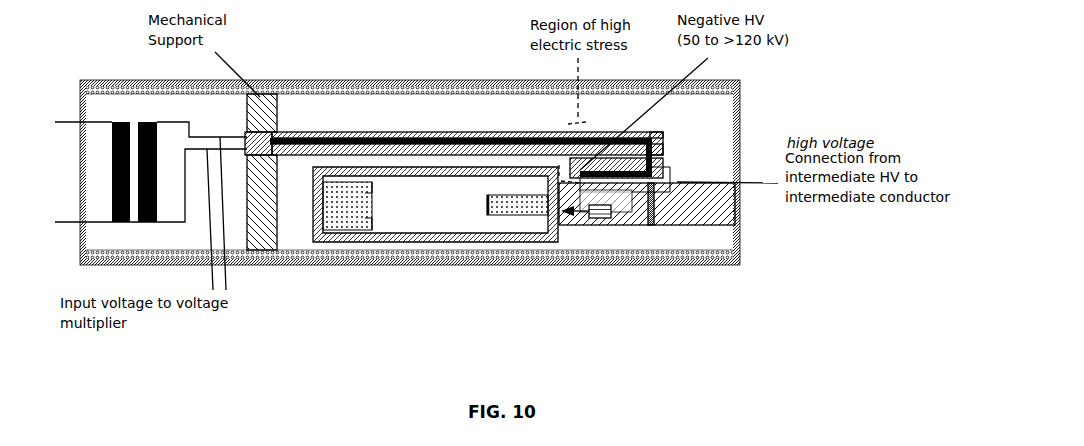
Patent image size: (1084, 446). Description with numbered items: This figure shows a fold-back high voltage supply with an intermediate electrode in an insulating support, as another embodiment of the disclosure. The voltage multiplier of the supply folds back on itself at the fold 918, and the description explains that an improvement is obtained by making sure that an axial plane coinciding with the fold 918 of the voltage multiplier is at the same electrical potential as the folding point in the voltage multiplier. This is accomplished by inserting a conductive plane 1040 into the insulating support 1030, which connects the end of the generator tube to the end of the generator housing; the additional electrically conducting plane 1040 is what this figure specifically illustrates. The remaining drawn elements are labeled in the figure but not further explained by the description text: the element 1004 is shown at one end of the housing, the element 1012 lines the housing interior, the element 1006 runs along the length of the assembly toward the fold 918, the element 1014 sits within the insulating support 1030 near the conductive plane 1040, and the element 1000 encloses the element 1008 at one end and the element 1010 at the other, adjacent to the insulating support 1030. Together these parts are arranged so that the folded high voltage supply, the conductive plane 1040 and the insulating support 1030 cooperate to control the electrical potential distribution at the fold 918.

The step up transformer 1004 is at (111, 122).
The insulating sleeve (optional) 1012 is at (296, 90).
The high voltage multiplier 1006 is at (446, 132).
The fold 918 is at (663, 152).
The insulating support 1030 is at (713, 225).
The conductive plane 1040 is at (657, 225).
The protective (surge) resistor 1014 is at (600, 218).
The neutron generator tube (Minitron) 1000 is at (415, 227).
The ion source 1008 is at (350, 212).
The target (neutron source) 1010 is at (490, 215).